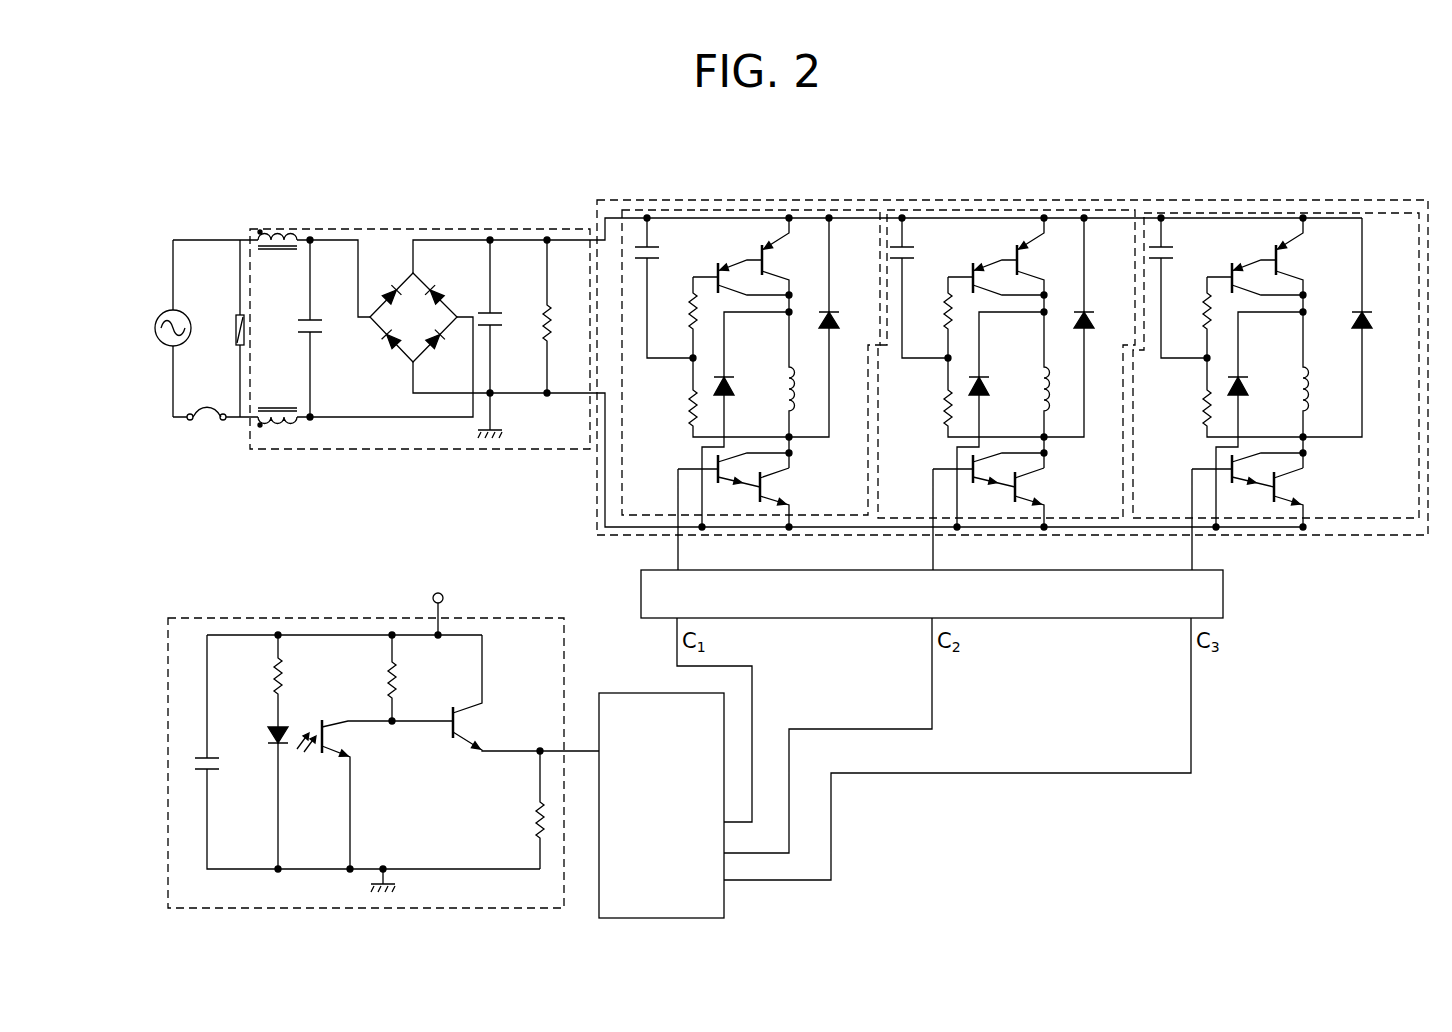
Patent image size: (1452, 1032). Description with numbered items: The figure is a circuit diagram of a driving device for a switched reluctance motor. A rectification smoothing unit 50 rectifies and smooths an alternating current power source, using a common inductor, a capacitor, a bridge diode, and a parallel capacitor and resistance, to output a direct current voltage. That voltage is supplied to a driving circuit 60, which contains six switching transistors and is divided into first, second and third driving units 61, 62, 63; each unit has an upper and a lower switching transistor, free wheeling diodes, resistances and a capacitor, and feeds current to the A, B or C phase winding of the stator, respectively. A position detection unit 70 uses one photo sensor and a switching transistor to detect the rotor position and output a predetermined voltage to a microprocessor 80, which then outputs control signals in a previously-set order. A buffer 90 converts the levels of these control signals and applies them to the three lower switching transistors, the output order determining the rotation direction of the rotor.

The rectification smoothing unit 50 is at (393, 450).
The driving circuit 60 is at (1012, 353).
The first driving unit 61 is at (712, 210).
The second driving unit 62 is at (1063, 212).
The third driving unit 63 is at (1257, 213).
The position detection unit 70 is at (295, 618).
The microprocessor 80 is at (655, 693).
The buffer 90 is at (1223, 594).